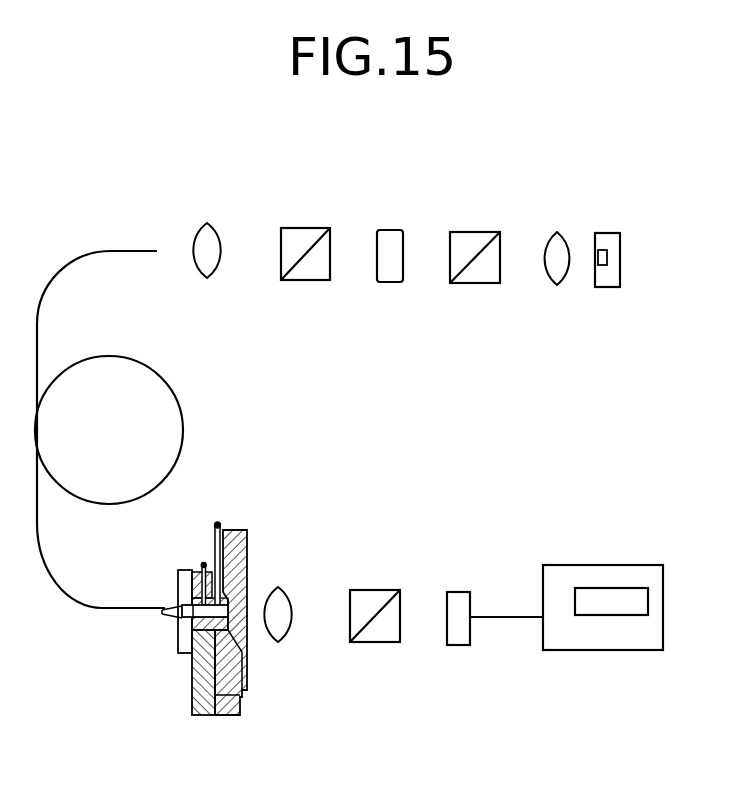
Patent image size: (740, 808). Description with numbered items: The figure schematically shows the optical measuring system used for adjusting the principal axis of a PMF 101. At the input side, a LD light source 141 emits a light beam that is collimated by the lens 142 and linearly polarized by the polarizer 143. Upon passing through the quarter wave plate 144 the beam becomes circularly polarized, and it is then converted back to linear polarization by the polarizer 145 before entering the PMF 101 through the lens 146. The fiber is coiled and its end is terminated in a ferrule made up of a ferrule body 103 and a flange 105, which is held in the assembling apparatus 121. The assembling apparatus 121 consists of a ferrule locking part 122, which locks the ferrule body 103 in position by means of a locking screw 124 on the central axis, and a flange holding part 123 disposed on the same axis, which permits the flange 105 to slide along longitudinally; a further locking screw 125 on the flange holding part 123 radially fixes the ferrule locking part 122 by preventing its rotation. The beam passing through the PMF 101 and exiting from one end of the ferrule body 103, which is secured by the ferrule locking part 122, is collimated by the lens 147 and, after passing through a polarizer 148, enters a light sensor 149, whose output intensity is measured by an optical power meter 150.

The PMF 101 is at (107, 250).
The ferrule body 103 is at (169, 621).
The flange 105 is at (168, 605).
The assembling apparatus 121 is at (218, 720).
The ferrule locking part 122 is at (238, 535).
The flange holding part 123 is at (192, 697).
The locking screw 124 is at (220, 522).
The locking screw 125 is at (203, 563).
The laser diode (LD) light source 141 is at (607, 240).
The optical lens 142 is at (552, 231).
The polarizer 143 is at (473, 231).
The quarter wave plate 144 is at (388, 229).
The polarizer 145 is at (302, 227).
The optical lens 146 is at (205, 222).
The optical lens 147 is at (282, 588).
The polarizer 148 is at (375, 590).
The light sensor 149 is at (463, 592).
The optical power meter 150 is at (585, 565).